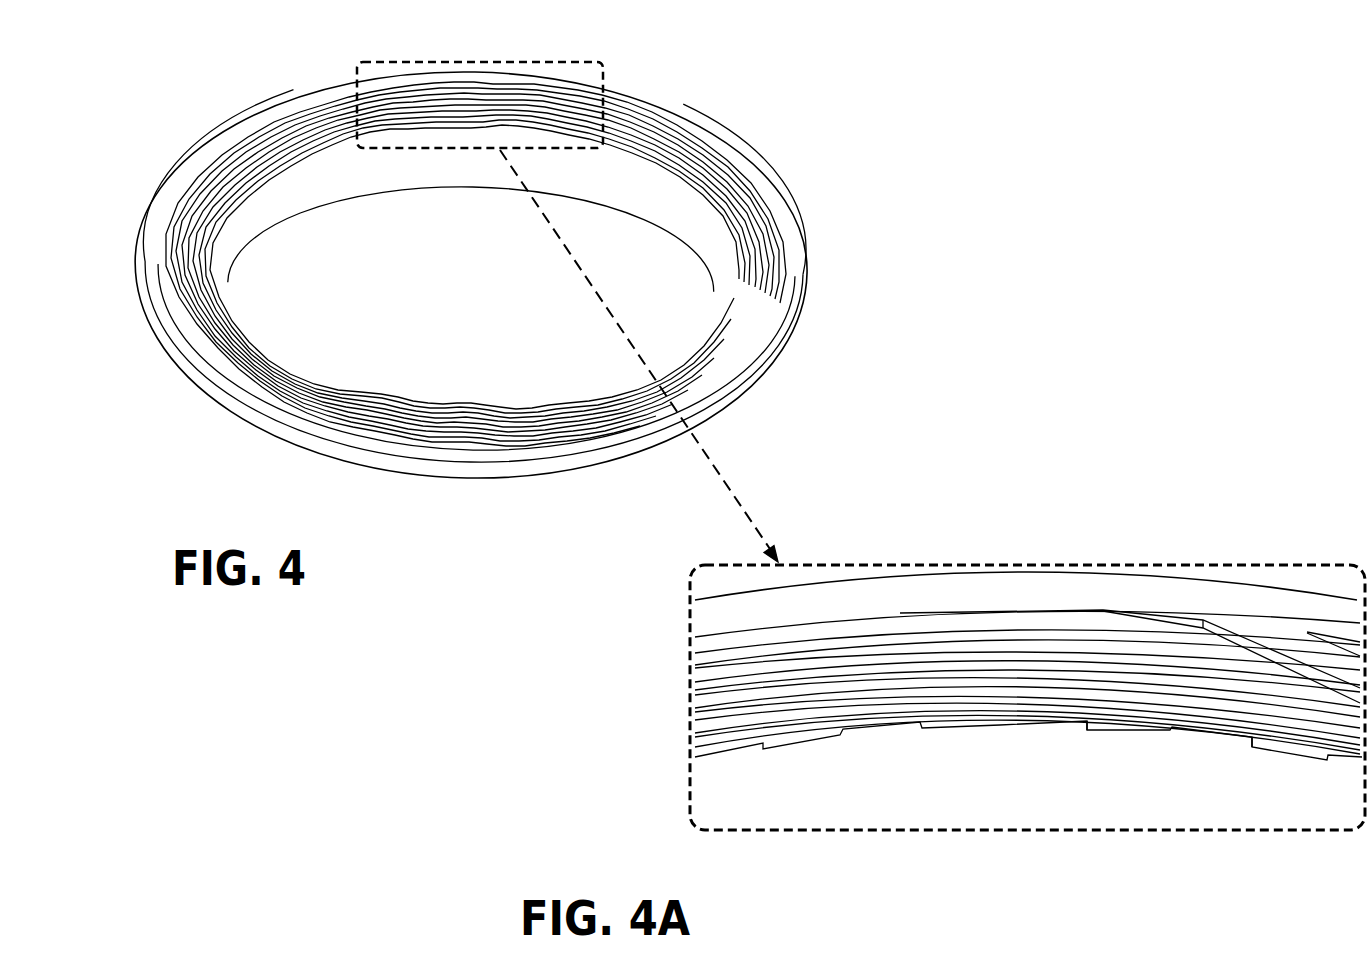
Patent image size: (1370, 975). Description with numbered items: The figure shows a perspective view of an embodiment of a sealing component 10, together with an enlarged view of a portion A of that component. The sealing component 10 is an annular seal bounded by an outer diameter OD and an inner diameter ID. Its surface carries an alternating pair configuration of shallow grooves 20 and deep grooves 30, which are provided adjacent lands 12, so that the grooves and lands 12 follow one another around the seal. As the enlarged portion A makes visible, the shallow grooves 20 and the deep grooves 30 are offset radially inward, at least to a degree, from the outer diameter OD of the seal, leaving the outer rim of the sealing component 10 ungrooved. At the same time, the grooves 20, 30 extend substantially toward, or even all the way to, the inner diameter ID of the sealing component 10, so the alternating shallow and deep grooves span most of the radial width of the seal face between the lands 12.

In FIG. 4, the sealing component 10 is at (766, 108).
In FIG. 4A, the lands 12 is at (945, 598).
In FIG. 4A, the shallow grooves 20 is at (777, 740).
In FIG. 4A, the deep grooves 30 is at (1107, 723).
In FIG. 4, the outer diameter OD is at (187, 157).
In FIG. 4A, the outer diameter OD is at (826, 598).
In FIG. 4, the inner diameter ID is at (277, 173).
In FIG. 4, the portion A is at (577, 60).